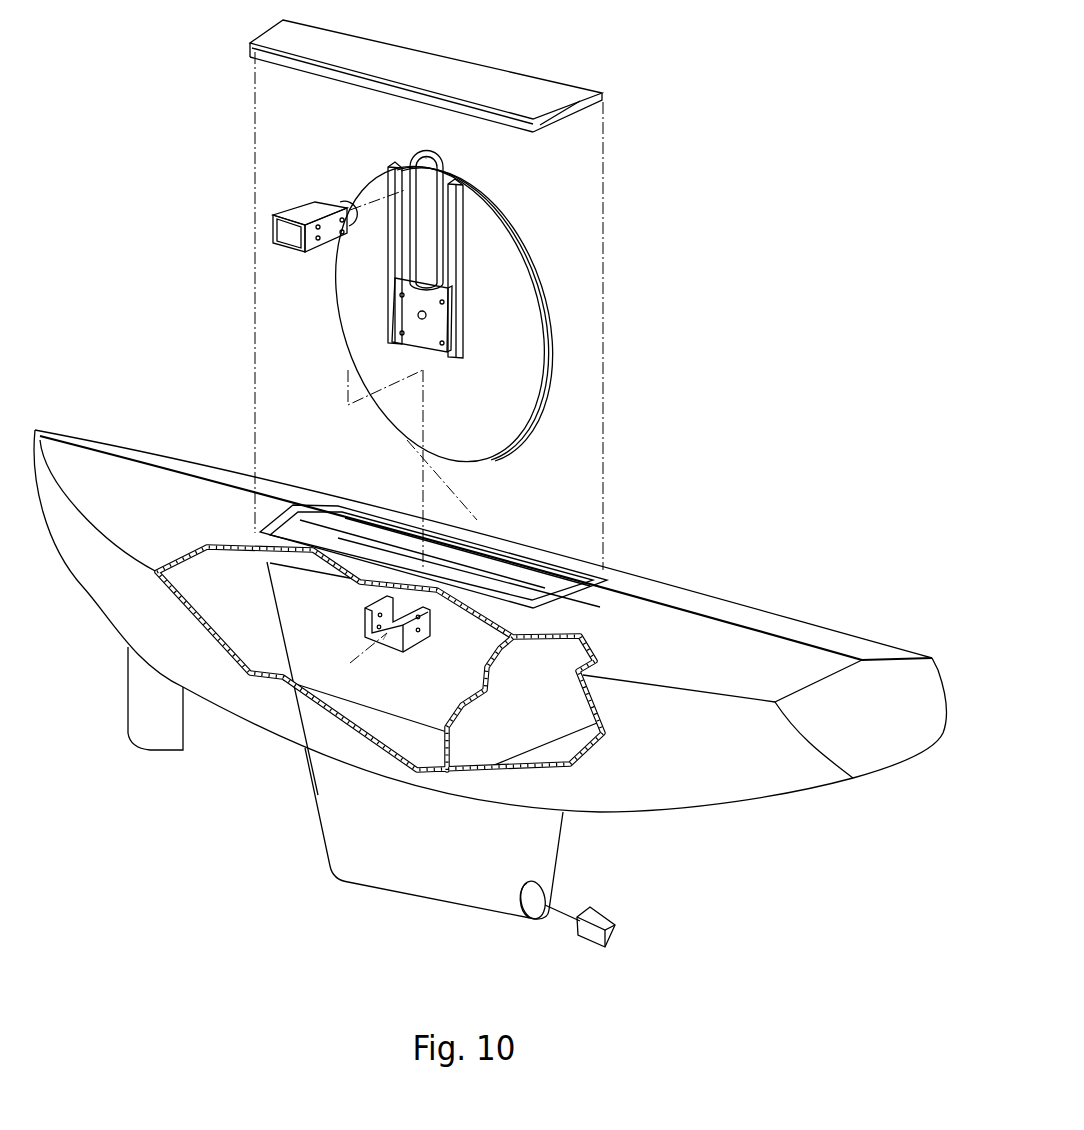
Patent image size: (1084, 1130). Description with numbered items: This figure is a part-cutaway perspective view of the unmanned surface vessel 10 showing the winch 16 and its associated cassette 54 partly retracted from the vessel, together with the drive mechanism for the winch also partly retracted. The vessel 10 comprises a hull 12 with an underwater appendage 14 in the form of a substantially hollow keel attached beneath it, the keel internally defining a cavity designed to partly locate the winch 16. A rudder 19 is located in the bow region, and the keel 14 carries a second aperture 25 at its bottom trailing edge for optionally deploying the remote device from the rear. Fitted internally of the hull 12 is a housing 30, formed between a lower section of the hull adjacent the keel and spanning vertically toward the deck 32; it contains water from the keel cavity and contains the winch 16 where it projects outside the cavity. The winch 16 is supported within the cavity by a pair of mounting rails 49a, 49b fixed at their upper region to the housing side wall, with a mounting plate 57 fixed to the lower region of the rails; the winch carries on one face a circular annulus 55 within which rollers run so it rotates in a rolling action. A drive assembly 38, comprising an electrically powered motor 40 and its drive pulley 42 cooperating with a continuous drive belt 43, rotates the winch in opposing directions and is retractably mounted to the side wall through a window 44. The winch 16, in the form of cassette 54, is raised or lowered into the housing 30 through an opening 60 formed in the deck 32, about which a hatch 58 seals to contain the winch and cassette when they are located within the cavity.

The unmanned surface vessel 10 is at (702, 555).
The hull 12 is at (218, 693).
The underwater appendage 14 is at (540, 840).
The winch 16 is at (503, 313).
The rudder 19 is at (147, 692).
The second aperture 25 is at (520, 900).
The housing 30 is at (202, 605).
The deck 32 is at (765, 662).
The drive assembly 38 is at (263, 213).
The electrically powered motor 40 is at (303, 215).
The drive pulley 42 is at (330, 200).
The continuous drive belt 43 is at (445, 153).
The window 44 is at (383, 640).
The mounting rail 49a is at (390, 262).
The mounting rail 49b is at (463, 250).
The cassette 54 is at (510, 198).
The circular annulus 55 is at (447, 283).
The mounting plate 57 is at (390, 327).
The hatch 58 is at (527, 97).
The opening 60 is at (542, 587).